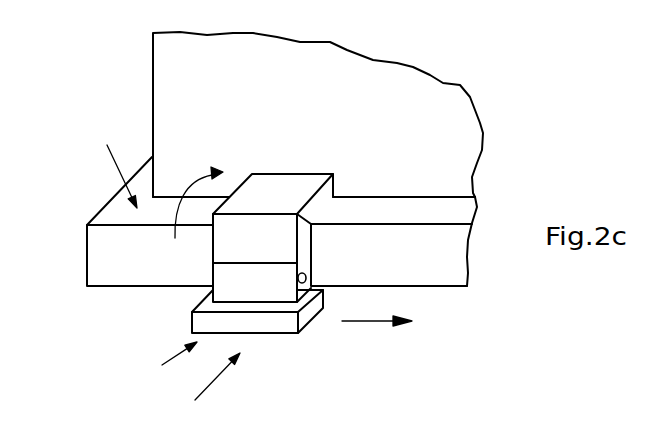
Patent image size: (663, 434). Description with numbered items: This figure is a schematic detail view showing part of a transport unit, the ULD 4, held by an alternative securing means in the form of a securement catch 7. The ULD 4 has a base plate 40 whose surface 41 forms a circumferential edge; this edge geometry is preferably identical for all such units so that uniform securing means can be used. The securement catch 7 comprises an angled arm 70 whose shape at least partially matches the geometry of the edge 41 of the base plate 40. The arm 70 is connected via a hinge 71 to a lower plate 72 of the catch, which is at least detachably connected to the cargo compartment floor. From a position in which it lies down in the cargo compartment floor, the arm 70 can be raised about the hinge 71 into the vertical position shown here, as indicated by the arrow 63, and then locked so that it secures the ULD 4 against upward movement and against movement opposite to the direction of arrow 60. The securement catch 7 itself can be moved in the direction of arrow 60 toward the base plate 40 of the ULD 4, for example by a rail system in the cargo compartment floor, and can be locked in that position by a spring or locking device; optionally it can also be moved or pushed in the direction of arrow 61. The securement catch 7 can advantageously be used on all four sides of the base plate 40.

The ULD 4 is at (170, 80).
The base plate 40 is at (103, 255).
The surface 41 is at (110, 163).
The arrow 63 is at (192, 194).
The angled arm 70 is at (290, 187).
The hinge 71 is at (308, 273).
The base plate 72 is at (203, 320).
The securement catch 7 is at (169, 364).
The arrow 60 is at (210, 387).
The arrow 61 is at (363, 322).